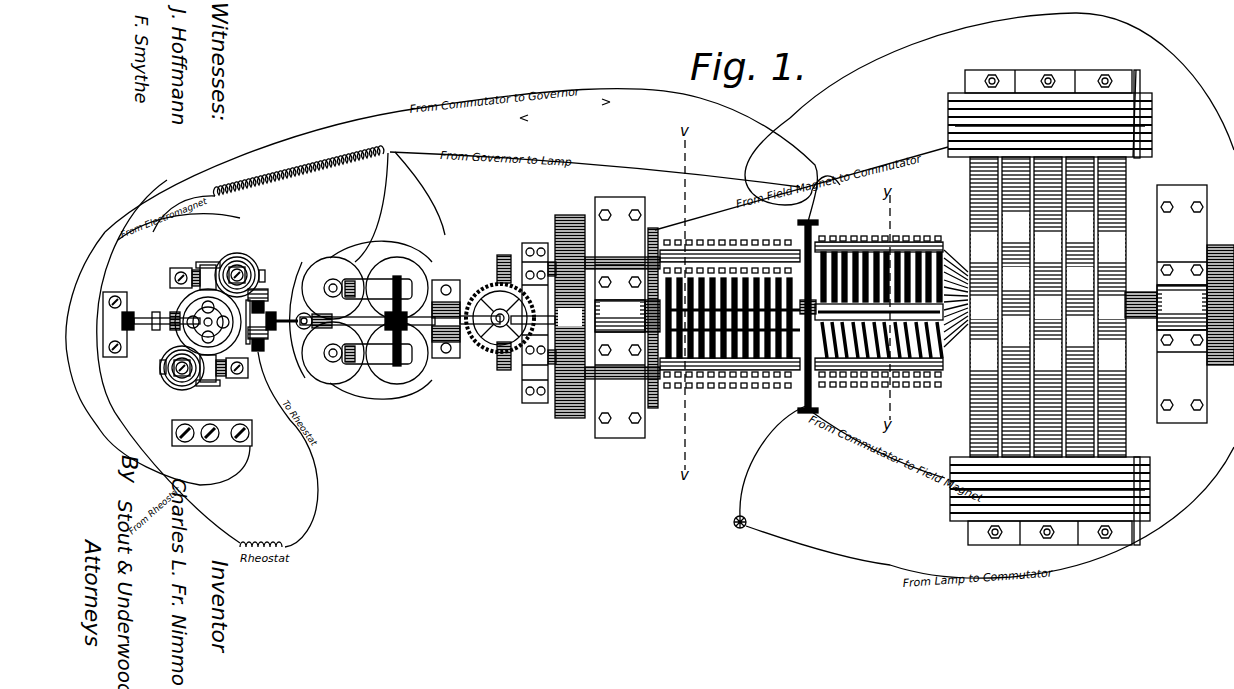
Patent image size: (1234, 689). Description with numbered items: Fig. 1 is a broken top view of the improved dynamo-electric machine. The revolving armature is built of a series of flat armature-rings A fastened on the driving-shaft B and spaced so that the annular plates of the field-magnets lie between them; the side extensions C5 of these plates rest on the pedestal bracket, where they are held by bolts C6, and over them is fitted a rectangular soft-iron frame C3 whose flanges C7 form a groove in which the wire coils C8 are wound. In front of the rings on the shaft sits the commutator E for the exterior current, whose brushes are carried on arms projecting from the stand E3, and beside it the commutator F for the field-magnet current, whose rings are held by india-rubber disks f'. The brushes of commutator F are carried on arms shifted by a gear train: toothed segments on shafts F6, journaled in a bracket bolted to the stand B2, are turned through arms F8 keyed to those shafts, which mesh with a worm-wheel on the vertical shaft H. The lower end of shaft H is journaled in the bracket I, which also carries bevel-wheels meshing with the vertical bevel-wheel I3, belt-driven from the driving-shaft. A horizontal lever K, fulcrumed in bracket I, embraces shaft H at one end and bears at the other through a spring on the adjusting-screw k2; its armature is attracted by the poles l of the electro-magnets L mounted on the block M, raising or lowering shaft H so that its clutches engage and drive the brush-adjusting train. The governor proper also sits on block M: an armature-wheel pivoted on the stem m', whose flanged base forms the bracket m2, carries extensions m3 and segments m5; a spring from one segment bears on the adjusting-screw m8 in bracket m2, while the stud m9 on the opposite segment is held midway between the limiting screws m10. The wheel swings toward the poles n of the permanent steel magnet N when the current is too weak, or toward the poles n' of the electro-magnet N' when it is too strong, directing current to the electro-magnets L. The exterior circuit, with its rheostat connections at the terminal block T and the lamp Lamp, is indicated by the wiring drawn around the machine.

The armature-ring A is at (1095, 220).
The driving-shaft B is at (1130, 292).
The stand B2 is at (622, 262).
The rectangular soft-iron frame C3 is at (1152, 110).
The extension C5 is at (968, 72).
The bolt C6 is at (996, 76).
The flange C7 is at (948, 100).
The wire coil C8 is at (955, 118).
The commutator E is at (940, 425).
The stand E3 is at (815, 225).
The commutator F is at (660, 262).
The shaft F6 is at (625, 310).
The arm F8 is at (504, 255).
The india-rubber disk f' is at (529, 319).
The vertical shaft H is at (490, 335).
The bracket I is at (438, 333).
The vertical bevel-wheel I3 is at (565, 428).
The horizontal lever K is at (335, 320).
The adjusting-screw k2 is at (294, 332).
The electro-magnet L is at (361, 321).
The pole l is at (404, 240).
The block M is at (252, 292).
The permanent steel magnet N is at (207, 320).
The electro-magnet N' is at (201, 322).
The pole n is at (225, 317).
The pole n' is at (203, 316).
The vertical stem m' is at (167, 313).
The bracket m2 is at (208, 264).
The extension m3 is at (128, 311).
The segment m5 is at (272, 350).
The adjusting-screw m8 is at (103, 338).
The stud m9 is at (268, 319).
The screw m10 is at (275, 288).
The terminal block T is at (212, 433).
The lamp Lamp is at (733, 532).